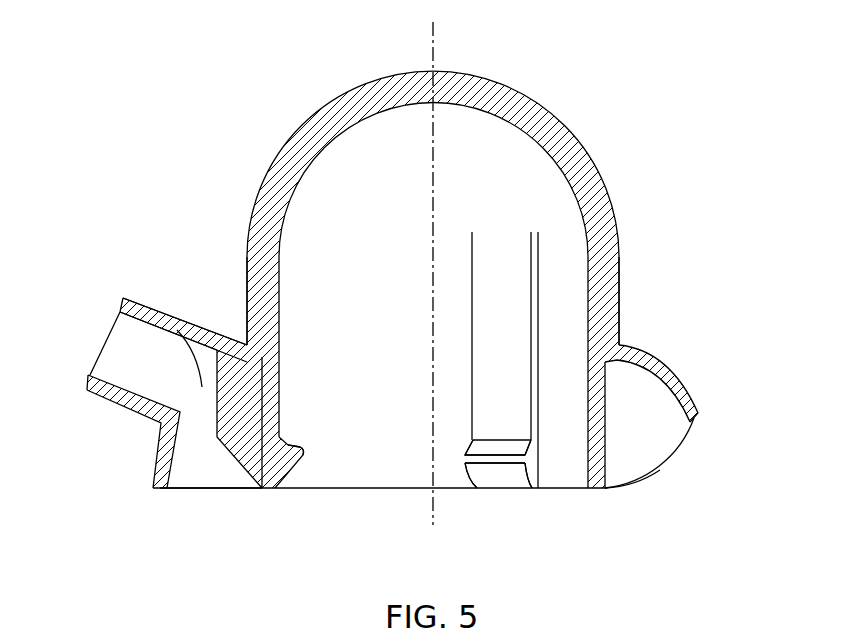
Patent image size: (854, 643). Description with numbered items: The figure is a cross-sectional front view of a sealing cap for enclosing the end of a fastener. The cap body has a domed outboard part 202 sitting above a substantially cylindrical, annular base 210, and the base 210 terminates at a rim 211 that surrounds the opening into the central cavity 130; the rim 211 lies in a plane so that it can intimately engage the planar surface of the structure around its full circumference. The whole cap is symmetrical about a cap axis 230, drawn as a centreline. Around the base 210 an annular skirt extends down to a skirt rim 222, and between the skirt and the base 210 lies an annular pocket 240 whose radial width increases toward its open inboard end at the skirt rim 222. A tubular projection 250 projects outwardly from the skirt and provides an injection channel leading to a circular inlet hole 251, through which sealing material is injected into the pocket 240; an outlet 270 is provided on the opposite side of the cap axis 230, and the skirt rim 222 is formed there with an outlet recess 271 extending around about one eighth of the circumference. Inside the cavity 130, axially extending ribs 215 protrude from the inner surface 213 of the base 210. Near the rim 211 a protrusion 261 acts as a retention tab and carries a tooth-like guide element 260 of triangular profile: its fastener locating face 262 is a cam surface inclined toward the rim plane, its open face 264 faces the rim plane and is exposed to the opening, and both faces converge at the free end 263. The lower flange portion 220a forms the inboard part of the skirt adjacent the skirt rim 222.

The central cavity 130 is at (557, 190).
The domed outboard part 202 is at (332, 117).
The base 210 is at (258, 272).
The rim 211 is at (595, 490).
The inner surface 213 is at (278, 250).
The rib 215 is at (505, 268).
The flange 220a is at (160, 448).
The skirt rim 222 is at (153, 490).
The cap axis 230 is at (437, 58).
The annular pocket 240 is at (638, 380).
The tubular projection 250 is at (90, 393).
The inlet hole 251 is at (158, 323).
The guide element 260 is at (272, 480).
The protrusion 261 is at (303, 449).
The fastener locating face 262 is at (477, 448).
The free end 263 is at (513, 460).
The open face 264 is at (497, 477).
The outlet 270 is at (682, 457).
The outlet recess 271 is at (657, 477).